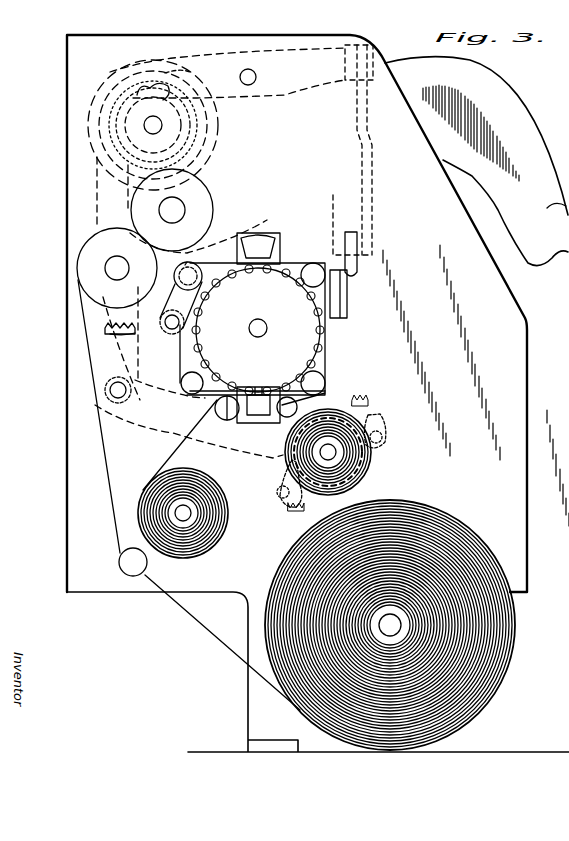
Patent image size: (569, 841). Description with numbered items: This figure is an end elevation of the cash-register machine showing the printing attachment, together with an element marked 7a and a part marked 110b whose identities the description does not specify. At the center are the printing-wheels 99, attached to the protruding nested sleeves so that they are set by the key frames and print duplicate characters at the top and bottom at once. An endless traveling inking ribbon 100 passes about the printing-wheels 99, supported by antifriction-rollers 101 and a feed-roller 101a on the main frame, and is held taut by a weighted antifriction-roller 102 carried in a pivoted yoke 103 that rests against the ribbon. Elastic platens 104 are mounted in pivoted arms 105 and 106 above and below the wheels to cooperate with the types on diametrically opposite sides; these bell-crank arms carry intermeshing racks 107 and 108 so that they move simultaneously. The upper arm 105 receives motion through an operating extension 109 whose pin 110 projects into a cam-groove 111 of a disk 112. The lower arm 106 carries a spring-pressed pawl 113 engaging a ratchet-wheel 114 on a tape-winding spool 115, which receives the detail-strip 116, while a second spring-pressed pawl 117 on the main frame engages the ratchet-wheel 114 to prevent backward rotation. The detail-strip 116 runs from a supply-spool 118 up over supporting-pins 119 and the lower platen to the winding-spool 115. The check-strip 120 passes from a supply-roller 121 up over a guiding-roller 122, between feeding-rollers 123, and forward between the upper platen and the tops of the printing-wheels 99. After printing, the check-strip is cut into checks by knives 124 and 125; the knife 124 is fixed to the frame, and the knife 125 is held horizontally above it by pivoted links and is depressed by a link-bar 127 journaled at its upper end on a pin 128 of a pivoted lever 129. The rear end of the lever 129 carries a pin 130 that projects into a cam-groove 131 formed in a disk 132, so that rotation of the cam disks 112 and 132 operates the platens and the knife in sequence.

The casing portion 7a is at (476, 161).
The printing-wheels 99 is at (258, 330).
The inking ribbon 100 is at (327, 335).
The antifriction-rollers 101 is at (310, 280).
The feed-roller 101a is at (186, 262).
The weighted antifriction-roller 102 is at (168, 338).
The pivoted yoke 103 is at (200, 313).
The elastic platens 104 is at (266, 242).
The upper pivoted arm 105 is at (243, 222).
The lower pivoted arm 106 is at (198, 400).
The rack 107 is at (105, 328).
The rack 108 is at (112, 335).
The operating extension 109 is at (103, 198).
The pin 110 is at (110, 125).
The pulley 110b is at (327, 393).
The cam-groove 111 is at (210, 140).
The disk 112 is at (222, 115).
The spring-pressed pawl 113 is at (380, 440).
The ratchet-wheel 114 is at (368, 472).
The tape-winding spool 115 is at (338, 467).
The detail-strip 116 is at (183, 448).
The spring-pressed pawl 117 is at (290, 465).
The supply-spool 118 is at (185, 515).
The supporting-pins 119 is at (224, 418).
The check-strip 120 is at (108, 500).
The supply-roller 121 is at (392, 612).
The guiding-roller 122 is at (147, 565).
The feeding-rollers 123 is at (212, 192).
The fixed knife 124 is at (347, 290).
The movable knife 125 is at (357, 240).
The link-bar 127 is at (385, 173).
The pin 128 is at (362, 122).
The pivoted lever 129 is at (303, 86).
The pin 130 is at (150, 84).
The cam-groove 131 is at (172, 73).
The disk 132 is at (148, 120).